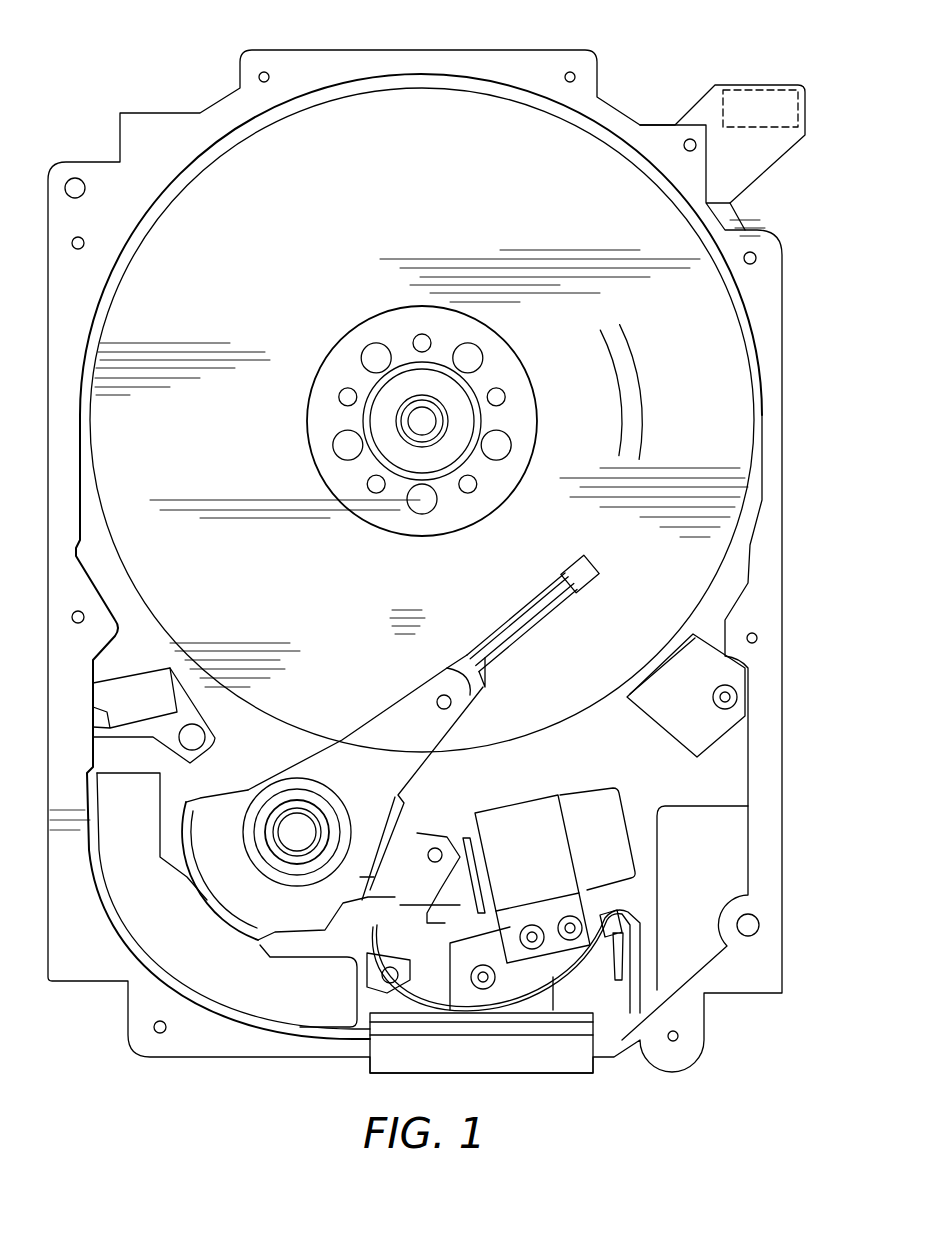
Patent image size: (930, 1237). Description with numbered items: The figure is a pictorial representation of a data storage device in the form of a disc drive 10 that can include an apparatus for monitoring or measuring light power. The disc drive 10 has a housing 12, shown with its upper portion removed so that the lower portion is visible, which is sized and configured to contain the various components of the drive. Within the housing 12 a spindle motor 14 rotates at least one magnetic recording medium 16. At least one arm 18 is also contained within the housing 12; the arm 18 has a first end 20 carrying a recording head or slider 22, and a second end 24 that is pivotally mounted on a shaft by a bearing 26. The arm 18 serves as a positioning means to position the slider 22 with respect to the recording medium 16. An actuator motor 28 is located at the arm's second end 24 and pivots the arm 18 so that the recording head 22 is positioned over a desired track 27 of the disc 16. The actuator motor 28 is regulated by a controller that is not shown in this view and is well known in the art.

The disc drive 10 is at (99, 97).
The housing 12 is at (550, 63).
The spindle motor 14 is at (415, 427).
The magnetic recording medium 16 is at (308, 222).
The arm 18 is at (408, 712).
The first end 20 is at (525, 603).
The recording head or slider 22 is at (580, 570).
The second end 24 is at (322, 773).
The bearing 26 is at (290, 823).
The track 27 is at (627, 396).
The actuator motor 28 is at (166, 952).